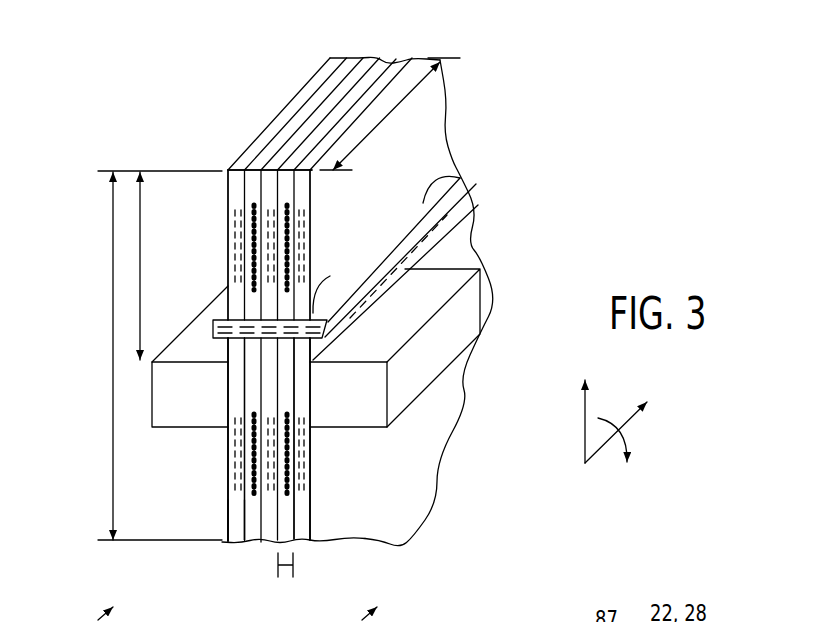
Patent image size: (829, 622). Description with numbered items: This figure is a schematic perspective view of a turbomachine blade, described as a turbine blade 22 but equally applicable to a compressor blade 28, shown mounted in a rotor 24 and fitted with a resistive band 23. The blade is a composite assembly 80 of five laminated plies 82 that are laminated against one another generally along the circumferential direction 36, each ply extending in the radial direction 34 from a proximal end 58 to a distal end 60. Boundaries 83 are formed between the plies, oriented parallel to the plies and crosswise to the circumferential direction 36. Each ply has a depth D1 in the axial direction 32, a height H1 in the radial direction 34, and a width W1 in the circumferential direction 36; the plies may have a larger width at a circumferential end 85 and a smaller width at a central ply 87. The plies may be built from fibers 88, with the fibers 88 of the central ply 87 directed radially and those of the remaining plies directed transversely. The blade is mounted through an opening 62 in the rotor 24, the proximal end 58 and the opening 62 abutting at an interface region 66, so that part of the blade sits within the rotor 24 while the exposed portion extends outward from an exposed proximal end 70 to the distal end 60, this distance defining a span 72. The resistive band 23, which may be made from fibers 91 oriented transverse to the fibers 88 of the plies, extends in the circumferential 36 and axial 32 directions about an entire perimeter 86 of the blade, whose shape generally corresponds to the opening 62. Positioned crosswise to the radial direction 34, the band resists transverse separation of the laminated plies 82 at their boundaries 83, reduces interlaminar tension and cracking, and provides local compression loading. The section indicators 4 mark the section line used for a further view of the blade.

The turbine blade 22 is at (417, 49).
The compressor blade 28 is at (370, 275).
The central ply 87 is at (313, 125).
The distal end 60 is at (225, 157).
The composite assembly 80 is at (433, 135).
The entire perimeter 86 is at (460, 175).
The resistive band 23 is at (447, 211).
The opening 62 is at (318, 358).
The circumferential end 85 is at (371, 219).
The depth D1 is at (387, 116).
The height H1 is at (113, 355).
The span 72 is at (140, 267).
The exposed proximal end 70 is at (217, 357).
The fibers 91 is at (342, 308).
The rotor 24 is at (427, 382).
The interface region 66 is at (223, 407).
The fibers 88 is at (270, 440).
The proximal end 58 is at (225, 510).
The laminated plies 82 is at (303, 540).
The boundaries 83 is at (245, 548).
The width W1 is at (290, 577).
The section line 4 is at (245, 611).
The radial direction 34 is at (583, 428).
The axial direction 32 is at (630, 420).
The circumferential direction 36 is at (621, 440).